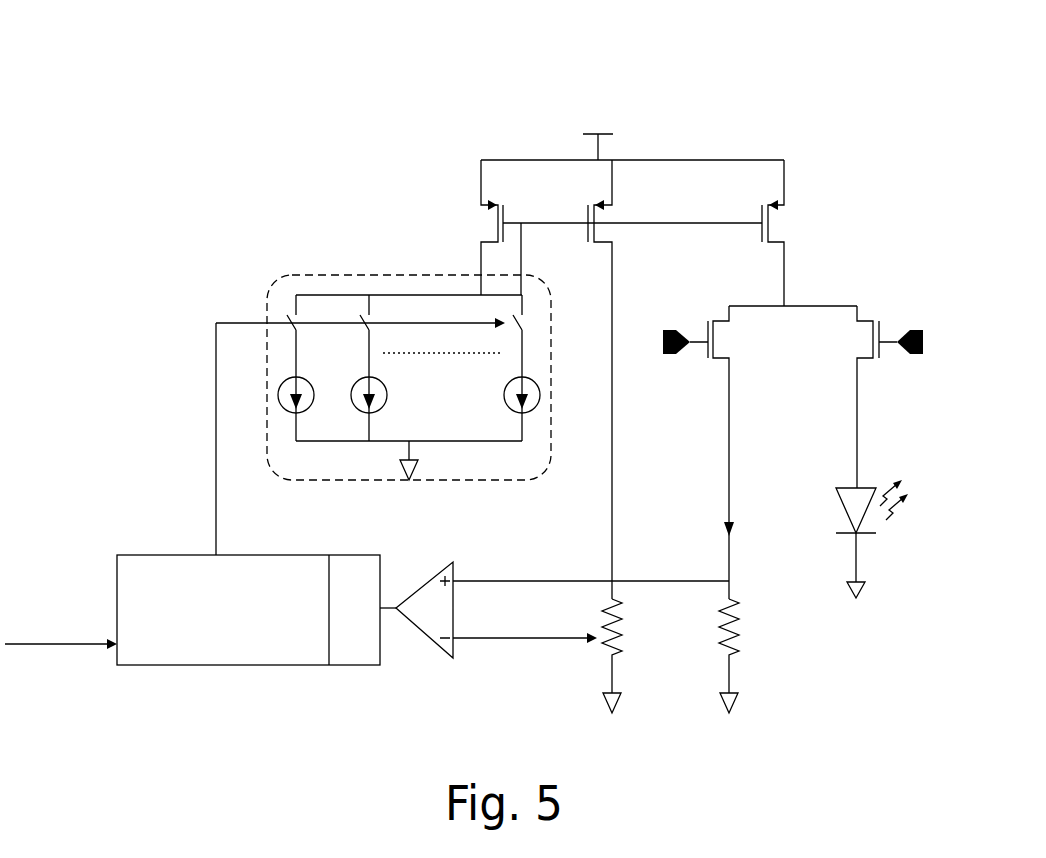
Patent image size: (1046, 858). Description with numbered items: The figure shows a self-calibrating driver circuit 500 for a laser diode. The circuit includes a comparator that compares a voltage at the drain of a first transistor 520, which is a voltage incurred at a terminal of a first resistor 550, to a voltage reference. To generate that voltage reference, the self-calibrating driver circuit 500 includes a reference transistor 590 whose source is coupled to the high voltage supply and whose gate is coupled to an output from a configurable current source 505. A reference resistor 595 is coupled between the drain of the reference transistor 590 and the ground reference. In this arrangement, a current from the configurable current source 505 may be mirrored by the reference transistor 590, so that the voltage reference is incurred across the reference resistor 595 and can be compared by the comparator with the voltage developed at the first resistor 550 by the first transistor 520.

The self-calibrating driver circuit 500 is at (122, 80).
The configurable current source 505 is at (268, 303).
The first transistor 520 is at (694, 333).
The first resistor 550 is at (742, 642).
The reference transistor 590 is at (588, 218).
The reference resistor 595 is at (598, 647).